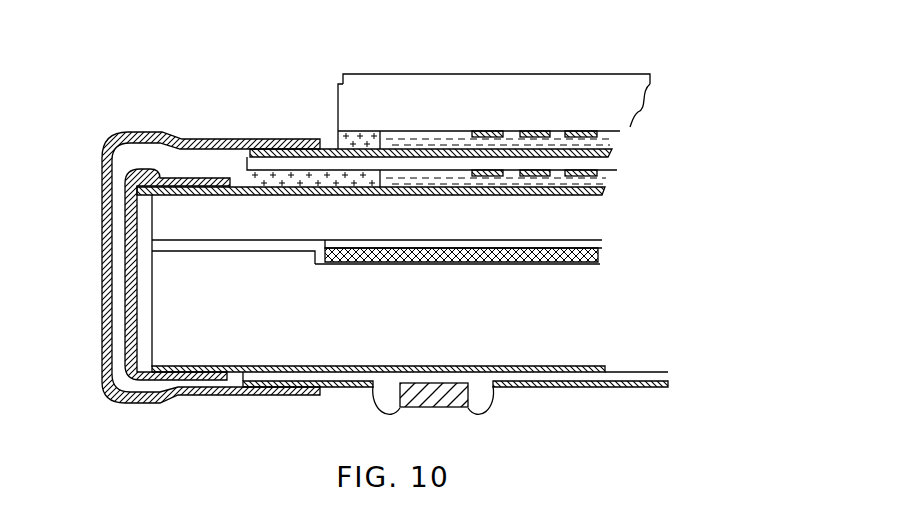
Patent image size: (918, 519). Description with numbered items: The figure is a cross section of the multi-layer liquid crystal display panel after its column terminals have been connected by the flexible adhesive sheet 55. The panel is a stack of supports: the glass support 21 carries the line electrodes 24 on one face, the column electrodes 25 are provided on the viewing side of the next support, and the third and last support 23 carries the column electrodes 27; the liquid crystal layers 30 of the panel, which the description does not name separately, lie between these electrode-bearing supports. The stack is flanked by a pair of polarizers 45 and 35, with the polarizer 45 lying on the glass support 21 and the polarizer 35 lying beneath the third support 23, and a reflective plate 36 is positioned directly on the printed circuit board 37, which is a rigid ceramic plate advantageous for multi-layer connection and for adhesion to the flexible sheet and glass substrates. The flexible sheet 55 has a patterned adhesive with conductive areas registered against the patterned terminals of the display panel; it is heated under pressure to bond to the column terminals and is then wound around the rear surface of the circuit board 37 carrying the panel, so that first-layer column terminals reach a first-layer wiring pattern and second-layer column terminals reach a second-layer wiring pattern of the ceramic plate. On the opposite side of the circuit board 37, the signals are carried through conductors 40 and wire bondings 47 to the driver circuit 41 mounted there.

The glass support 21 is at (622, 110).
The third support 23 is at (585, 218).
The line electrodes 24 is at (538, 132).
The column electrodes 25 is at (333, 142).
The column electrodes 27 is at (230, 185).
The electrolyte layers 30 is at (357, 178).
The polarizer 35 is at (595, 245).
The reflective plate 36 is at (603, 257).
The printed circuit board 37 is at (378, 339).
The conductors 40 is at (333, 393).
The driver circuit 41 is at (440, 407).
The polarizer 45 is at (497, 76).
The wire bondings 47 is at (493, 407).
The flexible sheet 55 is at (130, 300).